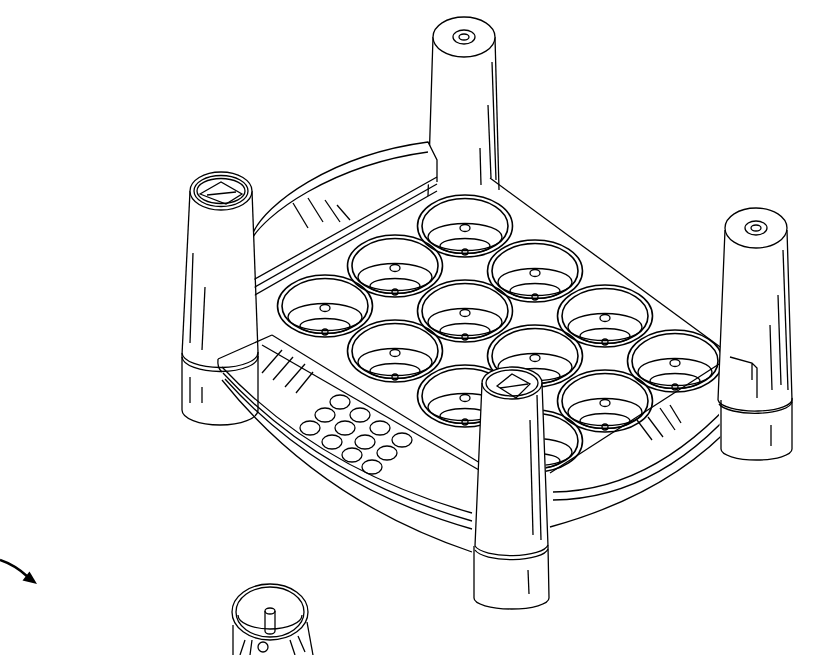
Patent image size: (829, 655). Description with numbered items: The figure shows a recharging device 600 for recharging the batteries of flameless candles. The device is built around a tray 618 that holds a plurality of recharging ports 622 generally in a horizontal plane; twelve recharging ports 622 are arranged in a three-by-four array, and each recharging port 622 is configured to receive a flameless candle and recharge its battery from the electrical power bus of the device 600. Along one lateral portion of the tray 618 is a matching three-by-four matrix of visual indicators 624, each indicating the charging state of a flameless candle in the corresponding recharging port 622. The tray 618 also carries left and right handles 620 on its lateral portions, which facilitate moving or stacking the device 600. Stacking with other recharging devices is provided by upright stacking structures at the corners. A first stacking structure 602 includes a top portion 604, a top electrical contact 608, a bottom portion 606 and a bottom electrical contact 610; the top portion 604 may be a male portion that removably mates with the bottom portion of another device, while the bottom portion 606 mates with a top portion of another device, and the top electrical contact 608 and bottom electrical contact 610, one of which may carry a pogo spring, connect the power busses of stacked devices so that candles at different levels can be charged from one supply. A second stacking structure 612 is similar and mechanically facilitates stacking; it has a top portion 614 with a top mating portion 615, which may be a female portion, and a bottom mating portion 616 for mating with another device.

The recharging device 600 is at (119, 27).
The first stacking structure 602 is at (194, 299).
The top portion 604 is at (240, 174).
The bottom portion 606 is at (210, 421).
The top electrical contact 608 is at (214, 188).
The bottom electrical contact 610 is at (443, 99).
The second stacking structure 612 is at (254, 612).
The top portion 614 is at (442, 31).
The top mating portion 615 is at (464, 38).
The bottom mating portion 616 is at (272, 607).
The tray 618 is at (563, 222).
The handle 620 is at (667, 476).
The recharging port 622 is at (613, 285).
The visual indicator 624 is at (358, 477).